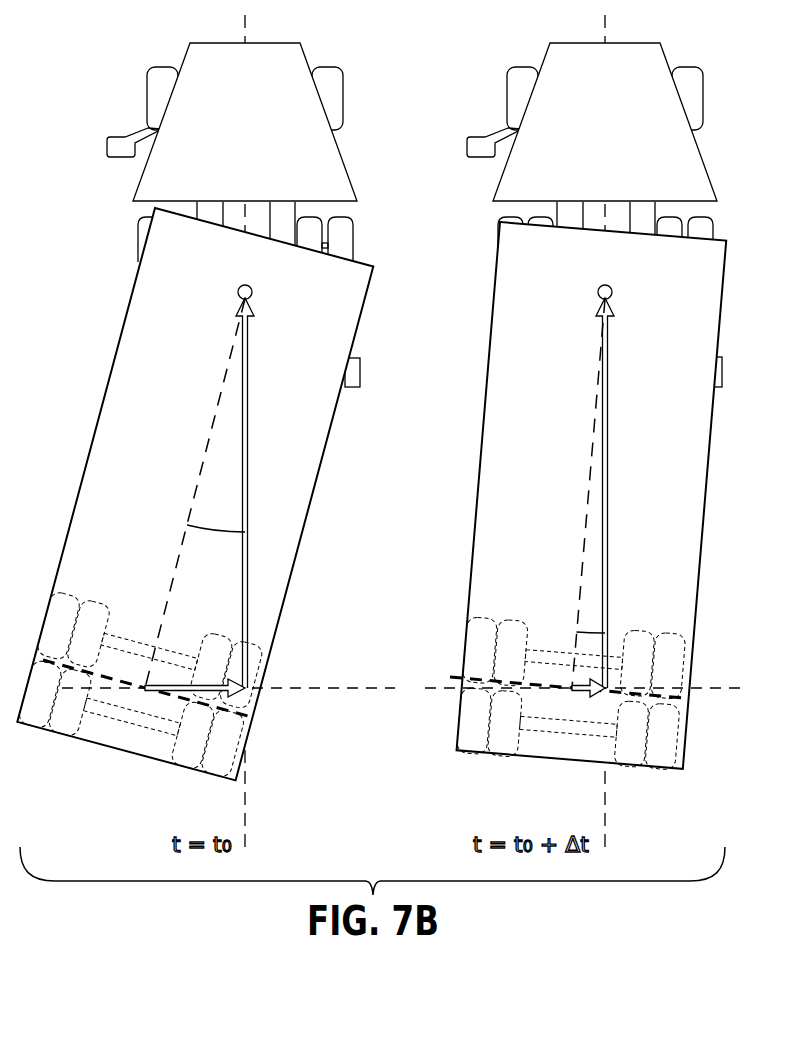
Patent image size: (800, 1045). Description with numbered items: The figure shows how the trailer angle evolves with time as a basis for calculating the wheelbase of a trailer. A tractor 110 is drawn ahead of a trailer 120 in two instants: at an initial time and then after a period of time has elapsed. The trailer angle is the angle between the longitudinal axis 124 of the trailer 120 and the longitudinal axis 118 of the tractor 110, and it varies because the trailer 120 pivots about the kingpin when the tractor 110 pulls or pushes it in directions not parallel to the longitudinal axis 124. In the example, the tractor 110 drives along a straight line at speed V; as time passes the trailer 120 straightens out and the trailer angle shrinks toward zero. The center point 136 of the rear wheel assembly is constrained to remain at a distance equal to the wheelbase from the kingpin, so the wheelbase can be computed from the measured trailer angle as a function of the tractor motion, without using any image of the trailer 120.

The tractor 110 is at (345, 165).
The trailer 120 is at (124, 334).
The longitudinal axis of the tractor 118 is at (250, 413).
The longitudinal axis of the trailer 124 is at (207, 448).
The center point 136 is at (158, 690).